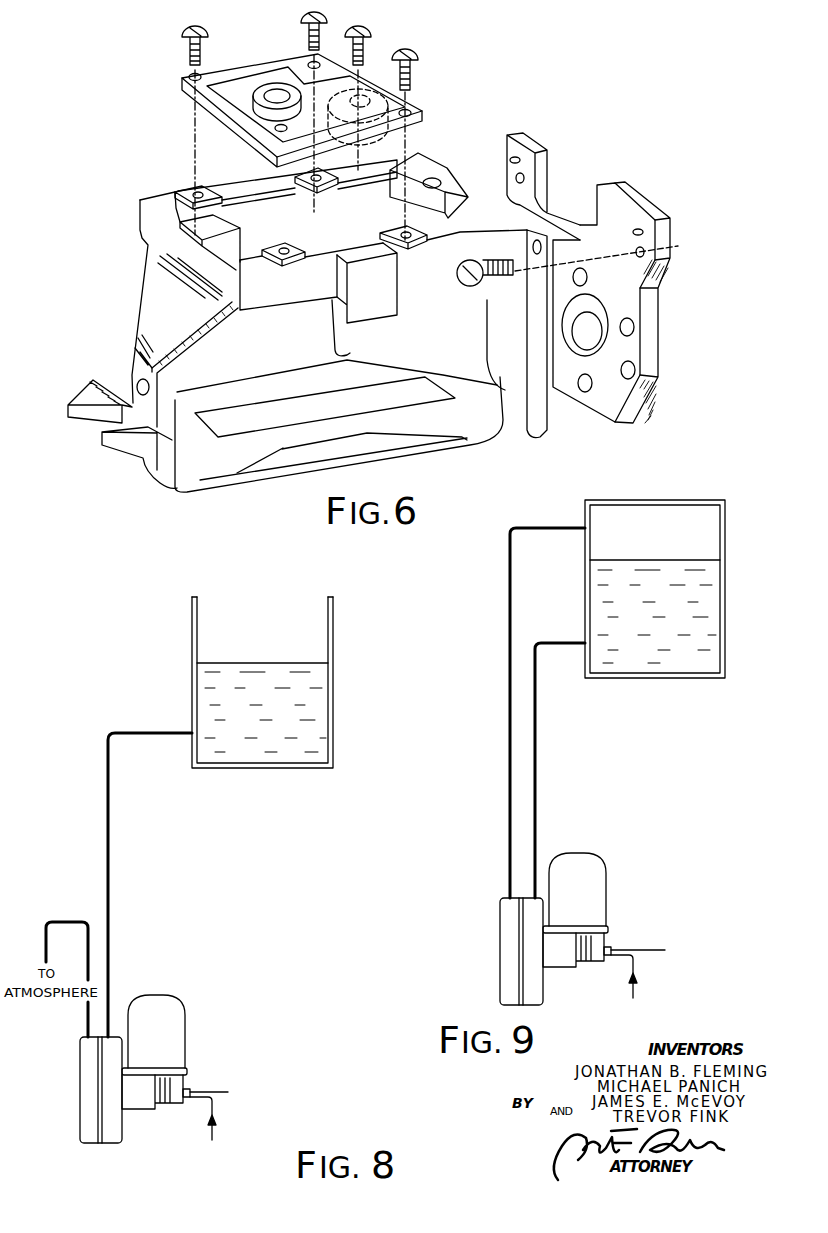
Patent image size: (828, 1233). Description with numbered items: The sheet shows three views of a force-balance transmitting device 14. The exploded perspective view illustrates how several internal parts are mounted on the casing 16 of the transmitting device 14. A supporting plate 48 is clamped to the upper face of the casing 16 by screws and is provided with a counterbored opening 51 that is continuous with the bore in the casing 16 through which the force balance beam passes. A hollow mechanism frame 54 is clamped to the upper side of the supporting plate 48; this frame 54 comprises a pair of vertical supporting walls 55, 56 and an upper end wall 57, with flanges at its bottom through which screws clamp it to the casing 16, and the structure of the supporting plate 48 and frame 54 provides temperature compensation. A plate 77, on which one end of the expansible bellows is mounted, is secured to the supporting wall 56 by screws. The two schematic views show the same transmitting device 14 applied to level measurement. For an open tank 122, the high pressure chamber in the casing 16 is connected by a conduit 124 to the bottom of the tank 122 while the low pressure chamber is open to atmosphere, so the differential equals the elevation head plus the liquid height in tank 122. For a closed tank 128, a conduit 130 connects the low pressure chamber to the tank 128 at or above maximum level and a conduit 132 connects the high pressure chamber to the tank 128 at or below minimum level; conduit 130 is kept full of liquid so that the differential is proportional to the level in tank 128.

In FIG. 6, the plate 77 is at (198, 117).
In FIG. 6, the vertical supporting wall 56 is at (247, 187).
In FIG. 6, the hollow mechanism frame 54 is at (382, 325).
In FIG. 6, the upper end wall 57 is at (137, 316).
In FIG. 6, the vertical supporting wall 55 is at (237, 478).
In FIG. 6, the counterbored opening 51 is at (587, 313).
In FIG. 6, the supporting plate 48 is at (609, 278).
In FIG. 8, the open tank 122 is at (192, 637).
In FIG. 8, the conduit 124 is at (109, 828).
In FIG. 8, the casing 16 is at (80, 1131).
In FIG. 9, the casing 16 is at (500, 936).
In FIG. 8, the transmitting device 14 is at (185, 1018).
In FIG. 9, the transmitting device 14 is at (645, 937).
In FIG. 9, the closed tank 128 is at (711, 678).
In FIG. 9, the conduit 130 is at (507, 666).
In FIG. 9, the conduit 132 is at (537, 718).